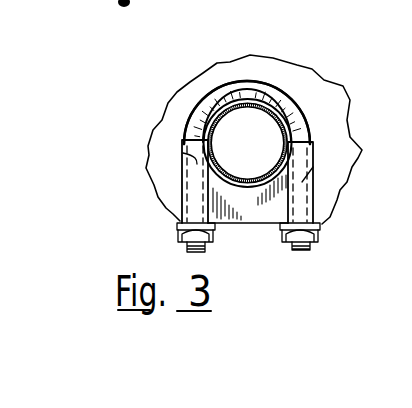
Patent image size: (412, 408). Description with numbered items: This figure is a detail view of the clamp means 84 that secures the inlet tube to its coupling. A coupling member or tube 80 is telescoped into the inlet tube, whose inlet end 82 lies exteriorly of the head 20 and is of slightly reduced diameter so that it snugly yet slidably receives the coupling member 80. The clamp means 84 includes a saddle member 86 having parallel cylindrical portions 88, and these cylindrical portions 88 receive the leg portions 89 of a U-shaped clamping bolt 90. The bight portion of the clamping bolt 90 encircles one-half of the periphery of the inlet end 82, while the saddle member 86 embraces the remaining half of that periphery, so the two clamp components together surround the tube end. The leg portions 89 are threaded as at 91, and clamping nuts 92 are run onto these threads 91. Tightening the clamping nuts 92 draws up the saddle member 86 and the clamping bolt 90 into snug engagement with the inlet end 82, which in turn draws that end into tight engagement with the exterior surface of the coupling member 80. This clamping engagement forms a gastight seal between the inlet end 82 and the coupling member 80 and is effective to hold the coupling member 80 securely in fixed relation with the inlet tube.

The head 20 is at (325, 84).
The coupling member 80 is at (249, 100).
The inlet end 82 is at (249, 100).
The clamp means 84 is at (282, 88).
The saddle member 86 is at (243, 217).
The parallel cylindrical portions 88 is at (180, 147).
The leg portions 89 is at (183, 154).
The U-shaped clamping bolt 90 is at (226, 86).
The threads 91 is at (187, 248).
The clamping nuts 92 is at (177, 227).